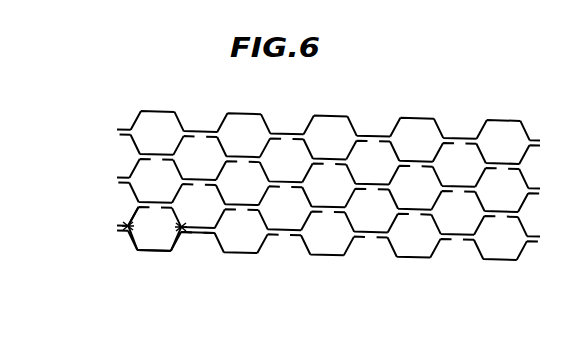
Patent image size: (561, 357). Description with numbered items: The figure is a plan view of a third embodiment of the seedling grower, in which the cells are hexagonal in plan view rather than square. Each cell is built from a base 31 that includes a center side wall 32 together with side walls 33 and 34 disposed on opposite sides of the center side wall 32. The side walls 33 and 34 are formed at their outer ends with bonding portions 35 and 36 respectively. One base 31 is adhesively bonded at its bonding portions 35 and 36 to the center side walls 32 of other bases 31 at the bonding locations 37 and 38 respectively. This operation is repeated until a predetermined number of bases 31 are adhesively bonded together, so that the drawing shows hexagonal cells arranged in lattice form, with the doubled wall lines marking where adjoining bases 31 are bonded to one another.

The base 31 is at (140, 250).
The center side wall 32 is at (161, 251).
The side wall 33 is at (130, 240).
The side wall 34 is at (178, 234).
The bonding portion 35 is at (126, 226).
The bonding portion 36 is at (190, 233).
The bonding location 37 is at (128, 225).
The bonding location 38 is at (182, 226).